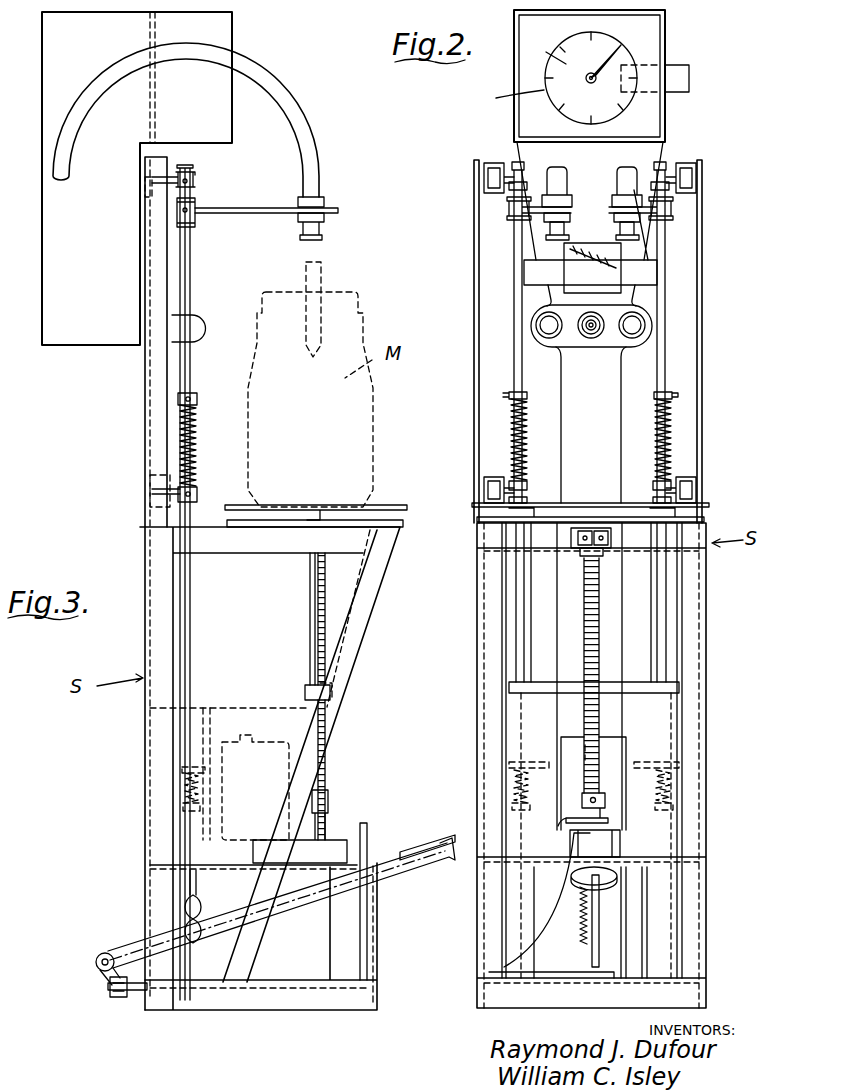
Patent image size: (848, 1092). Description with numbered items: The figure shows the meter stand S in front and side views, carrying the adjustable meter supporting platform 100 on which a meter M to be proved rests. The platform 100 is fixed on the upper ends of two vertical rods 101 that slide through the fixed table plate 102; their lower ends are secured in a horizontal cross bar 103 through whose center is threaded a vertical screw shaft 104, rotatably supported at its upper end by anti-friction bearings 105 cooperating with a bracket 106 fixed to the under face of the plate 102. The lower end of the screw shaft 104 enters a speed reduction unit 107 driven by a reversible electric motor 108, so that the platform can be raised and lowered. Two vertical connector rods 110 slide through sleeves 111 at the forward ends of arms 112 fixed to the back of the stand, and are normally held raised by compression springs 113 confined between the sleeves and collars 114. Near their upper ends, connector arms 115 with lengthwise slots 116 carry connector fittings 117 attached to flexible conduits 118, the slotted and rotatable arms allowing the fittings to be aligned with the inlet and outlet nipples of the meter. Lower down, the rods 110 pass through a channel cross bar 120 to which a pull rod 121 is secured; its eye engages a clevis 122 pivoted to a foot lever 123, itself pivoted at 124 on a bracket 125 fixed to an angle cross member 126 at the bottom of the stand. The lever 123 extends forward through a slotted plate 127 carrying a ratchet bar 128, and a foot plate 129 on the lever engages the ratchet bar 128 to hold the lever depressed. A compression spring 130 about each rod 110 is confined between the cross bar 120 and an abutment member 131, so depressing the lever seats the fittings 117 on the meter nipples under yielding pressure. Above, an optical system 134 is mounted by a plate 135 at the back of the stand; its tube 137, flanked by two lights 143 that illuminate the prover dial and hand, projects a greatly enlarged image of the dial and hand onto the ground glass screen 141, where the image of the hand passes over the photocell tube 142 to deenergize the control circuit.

In FIG. 3, the meter supporting platform 100 is at (384, 504).
In FIG. 2, the meter supporting platform 100 is at (548, 502).
In FIG. 3, the vertical rods 101 is at (310, 590).
In FIG. 2, the vertical rods 101 is at (524, 590).
In FIG. 3, the table plate 102 is at (403, 523).
In FIG. 2, the table plate 102 is at (605, 522).
In FIG. 3, the horizontal cross bar 103 is at (306, 688).
In FIG. 2, the horizontal cross bar 103 is at (510, 691).
In FIG. 3, the screw shaft 104 is at (326, 620).
In FIG. 2, the screw shaft 104 is at (586, 643).
In FIG. 2, the anti-friction bearings 105 is at (562, 540).
In FIG. 2, the bracket 106 is at (613, 550).
In FIG. 3, the speed reduction unit 107 is at (331, 840).
In FIG. 2, the speed reduction unit 107 is at (622, 853).
In FIG. 3, the reversible electric motor 108 is at (237, 730).
In FIG. 2, the reversible electric motor 108 is at (578, 792).
In FIG. 3, the connector rods 110 is at (193, 617).
In FIG. 2, the connector rods 110 is at (524, 275).
In FIG. 3, the sleeves 111 is at (197, 493).
In FIG. 2, the sleeves 111 is at (512, 481).
In FIG. 3, the arms 112 is at (158, 181).
In FIG. 2, the arms 112 is at (494, 175).
In FIG. 3, the compression springs 113 is at (188, 433).
In FIG. 2, the compression springs 113 is at (515, 425).
In FIG. 3, the collars 114 is at (178, 399).
In FIG. 2, the collars 114 is at (512, 392).
In FIG. 3, the connector arms 115 is at (208, 214).
In FIG. 2, the connector arms 115 is at (612, 209).
In FIG. 3, the lengthwise slots 116 is at (235, 208).
In FIG. 3, the connector fittings 117 is at (325, 231).
In FIG. 2, the connector fittings 117 is at (552, 232).
In FIG. 3, the flexible conduits 118 is at (284, 95).
In FIG. 2, the flexible conduits 118 is at (561, 180).
In FIG. 3, the channel cross bar 120 is at (187, 767).
In FIG. 2, the channel cross bar 120 is at (530, 762).
In FIG. 3, the pull rod 121 is at (190, 873).
In FIG. 3, the clevis 122 is at (187, 922).
In FIG. 3, the foot lever 123 is at (283, 928).
In FIG. 2, the foot lever 123 is at (599, 900).
In FIG. 3, the pivot 124 is at (101, 958).
In FIG. 3, the bracket 125 is at (110, 984).
In FIG. 3, the angle cross member 126 is at (138, 992).
In FIG. 3, the slotted plate 127 is at (374, 953).
In FIG. 2, the slotted plate 127 is at (541, 918).
In FIG. 2, the ratchet bar 128 is at (580, 926).
In FIG. 3, the foot plate 129 is at (410, 862).
In FIG. 2, the foot plate 129 is at (575, 876).
In FIG. 3, the compression spring 130 is at (185, 790).
In FIG. 2, the compression spring 130 is at (513, 785).
In FIG. 3, the abutment member 131 is at (185, 809).
In FIG. 2, the abutment member 131 is at (512, 808).
In FIG. 3, the optical system 134 is at (40, 343).
In FIG. 2, the optical system 134 is at (678, 134).
In FIG. 3, the plate 135 is at (142, 358).
In FIG. 2, the plate 135 is at (612, 384).
In FIG. 2, the tube 137 is at (606, 310).
In FIG. 2, the ground glass screen 141 is at (638, 40).
In FIG. 2, the photocell tube 142 is at (689, 78).
In FIG. 3, the lights 143 is at (200, 318).
In FIG. 2, the lights 143 is at (537, 322).